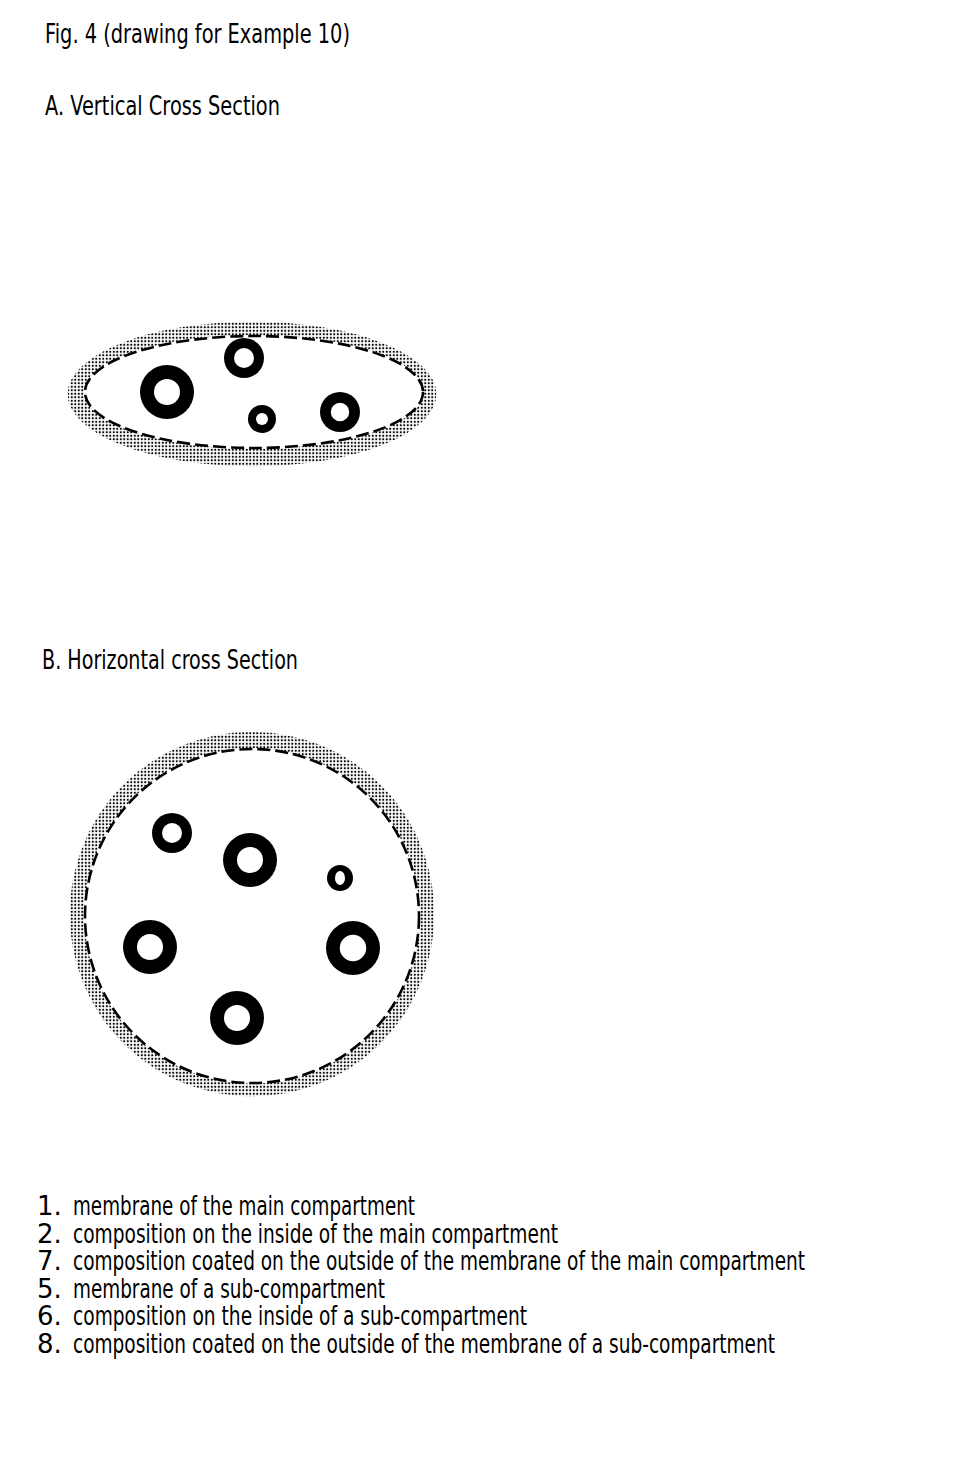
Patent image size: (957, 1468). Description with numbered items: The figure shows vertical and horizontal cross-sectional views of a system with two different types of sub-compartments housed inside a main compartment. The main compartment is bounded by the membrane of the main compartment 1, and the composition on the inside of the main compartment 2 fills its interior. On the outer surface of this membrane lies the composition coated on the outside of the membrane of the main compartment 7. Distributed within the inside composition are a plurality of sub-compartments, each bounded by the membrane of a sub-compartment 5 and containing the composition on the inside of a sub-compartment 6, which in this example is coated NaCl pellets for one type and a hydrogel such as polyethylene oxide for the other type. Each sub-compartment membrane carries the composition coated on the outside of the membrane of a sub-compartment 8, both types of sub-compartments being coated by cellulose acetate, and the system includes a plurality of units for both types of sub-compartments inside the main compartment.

The membrane of the main compartment 1 is at (312, 338).
The composition on the inside of the main compartment 2 is at (338, 363).
The composition coated on the outside of the membrane of the main compartment 7 is at (418, 367).
The membrane of a sub-compartment 5 is at (343, 408).
The composition on the inside of a sub-compartment 6 is at (343, 412).
The composition coated on the outside of the membrane of a sub-compartment 8 is at (353, 422).